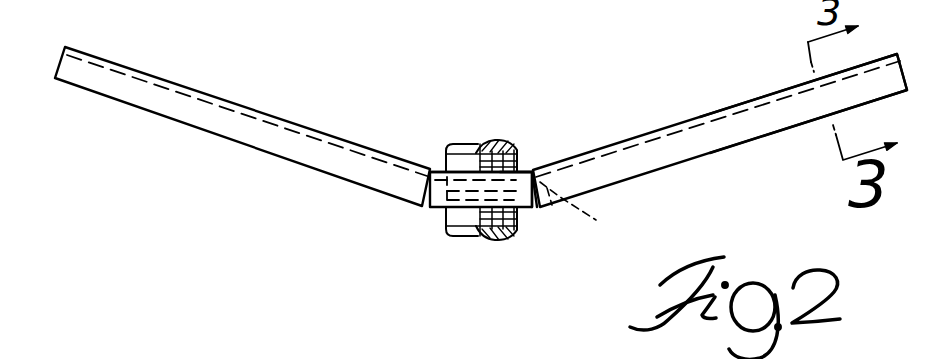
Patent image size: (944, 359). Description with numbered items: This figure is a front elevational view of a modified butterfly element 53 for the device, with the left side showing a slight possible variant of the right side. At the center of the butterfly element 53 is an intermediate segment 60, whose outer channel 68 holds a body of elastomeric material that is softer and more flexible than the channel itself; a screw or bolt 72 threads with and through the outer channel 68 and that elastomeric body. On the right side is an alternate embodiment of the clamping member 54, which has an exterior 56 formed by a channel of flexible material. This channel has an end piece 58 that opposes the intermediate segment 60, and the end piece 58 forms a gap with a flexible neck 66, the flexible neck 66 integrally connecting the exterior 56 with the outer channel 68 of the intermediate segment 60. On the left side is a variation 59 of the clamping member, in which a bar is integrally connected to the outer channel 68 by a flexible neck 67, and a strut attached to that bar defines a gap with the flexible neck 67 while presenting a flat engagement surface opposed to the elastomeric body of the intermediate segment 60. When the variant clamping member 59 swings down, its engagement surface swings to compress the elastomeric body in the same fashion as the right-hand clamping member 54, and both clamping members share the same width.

The butterfly element 53 is at (412, 102).
The clamping member 54 is at (634, 137).
The exterior 56 is at (738, 104).
The end piece 58 is at (583, 209).
The variation of the clamping member 59 is at (243, 150).
The intermediate segment 60 is at (525, 208).
The flexible neck 66 is at (528, 172).
The flexible neck 67 is at (430, 172).
The outer channel 68 is at (439, 166).
The screw or bolt 72 is at (521, 172).